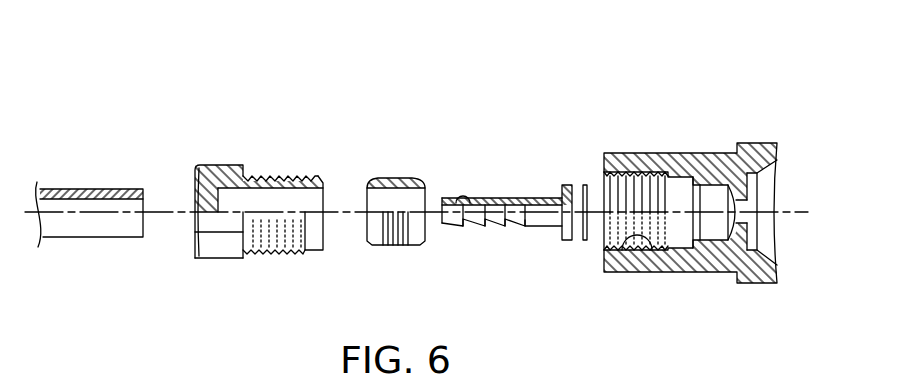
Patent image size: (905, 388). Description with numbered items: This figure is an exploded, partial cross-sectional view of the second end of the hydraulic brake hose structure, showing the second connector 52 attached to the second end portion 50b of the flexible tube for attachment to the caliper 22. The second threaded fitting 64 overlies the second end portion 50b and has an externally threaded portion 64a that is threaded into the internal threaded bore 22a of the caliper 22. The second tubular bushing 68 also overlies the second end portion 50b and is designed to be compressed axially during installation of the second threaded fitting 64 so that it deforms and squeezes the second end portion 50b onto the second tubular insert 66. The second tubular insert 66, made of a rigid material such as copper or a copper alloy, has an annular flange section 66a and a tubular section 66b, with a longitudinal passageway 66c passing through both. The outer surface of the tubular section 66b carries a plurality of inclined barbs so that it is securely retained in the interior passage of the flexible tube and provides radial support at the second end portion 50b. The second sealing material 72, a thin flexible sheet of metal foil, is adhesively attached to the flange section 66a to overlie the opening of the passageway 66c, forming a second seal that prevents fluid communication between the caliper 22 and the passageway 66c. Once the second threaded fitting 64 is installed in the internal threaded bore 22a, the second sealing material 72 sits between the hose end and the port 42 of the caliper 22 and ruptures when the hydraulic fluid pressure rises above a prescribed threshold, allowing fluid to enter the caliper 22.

The second connector 52 is at (350, 99).
The second end portion 50b is at (88, 188).
The second threaded fitting 64 is at (259, 171).
The externally threaded portion 64a is at (280, 172).
The second tubular bushing 68 is at (416, 165).
The second tubular insert 66 is at (506, 214).
The annular flange section 66a is at (565, 241).
The tubular section 66b is at (477, 228).
The longitudinal passageway 66c is at (462, 198).
The second sealing material 72 is at (585, 242).
The caliper 22 is at (706, 205).
The internal threaded bore 22a is at (657, 255).
The port 42 is at (750, 216).